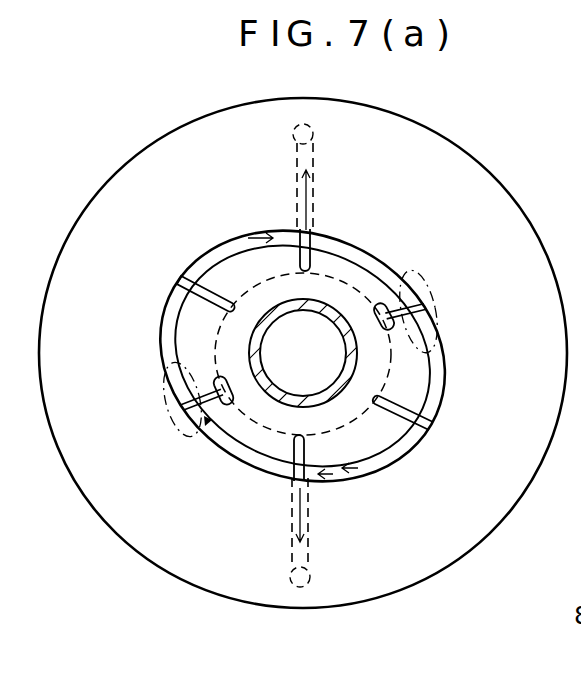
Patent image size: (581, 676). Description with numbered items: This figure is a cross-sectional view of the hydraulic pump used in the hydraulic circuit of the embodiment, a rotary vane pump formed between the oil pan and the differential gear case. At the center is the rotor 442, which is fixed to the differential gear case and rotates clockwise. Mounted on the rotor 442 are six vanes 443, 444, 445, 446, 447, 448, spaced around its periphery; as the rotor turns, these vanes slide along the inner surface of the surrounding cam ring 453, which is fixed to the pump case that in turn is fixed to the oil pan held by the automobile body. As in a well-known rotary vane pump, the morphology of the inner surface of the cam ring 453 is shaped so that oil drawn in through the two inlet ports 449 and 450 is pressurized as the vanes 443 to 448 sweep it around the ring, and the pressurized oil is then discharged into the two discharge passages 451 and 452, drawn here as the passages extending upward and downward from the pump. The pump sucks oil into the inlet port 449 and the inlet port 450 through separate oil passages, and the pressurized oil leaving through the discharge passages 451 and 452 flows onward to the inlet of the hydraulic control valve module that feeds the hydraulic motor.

The rotor 442 is at (243, 443).
The vane 443 is at (212, 388).
The vane 444 is at (193, 287).
The vane 445 is at (304, 258).
The vane 446 is at (420, 301).
The vane 447 is at (412, 418).
The vane 448 is at (292, 460).
The inlet port 449 is at (164, 395).
The inlet port 450 is at (433, 291).
The discharge passage 451 is at (307, 202).
The discharge passage 452 is at (304, 515).
The cam ring 453 is at (488, 182).